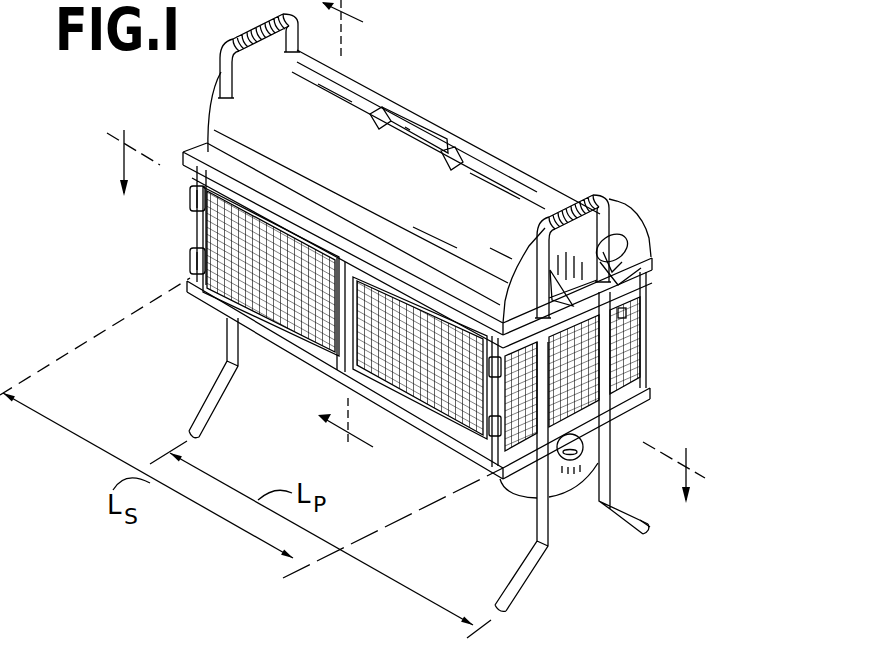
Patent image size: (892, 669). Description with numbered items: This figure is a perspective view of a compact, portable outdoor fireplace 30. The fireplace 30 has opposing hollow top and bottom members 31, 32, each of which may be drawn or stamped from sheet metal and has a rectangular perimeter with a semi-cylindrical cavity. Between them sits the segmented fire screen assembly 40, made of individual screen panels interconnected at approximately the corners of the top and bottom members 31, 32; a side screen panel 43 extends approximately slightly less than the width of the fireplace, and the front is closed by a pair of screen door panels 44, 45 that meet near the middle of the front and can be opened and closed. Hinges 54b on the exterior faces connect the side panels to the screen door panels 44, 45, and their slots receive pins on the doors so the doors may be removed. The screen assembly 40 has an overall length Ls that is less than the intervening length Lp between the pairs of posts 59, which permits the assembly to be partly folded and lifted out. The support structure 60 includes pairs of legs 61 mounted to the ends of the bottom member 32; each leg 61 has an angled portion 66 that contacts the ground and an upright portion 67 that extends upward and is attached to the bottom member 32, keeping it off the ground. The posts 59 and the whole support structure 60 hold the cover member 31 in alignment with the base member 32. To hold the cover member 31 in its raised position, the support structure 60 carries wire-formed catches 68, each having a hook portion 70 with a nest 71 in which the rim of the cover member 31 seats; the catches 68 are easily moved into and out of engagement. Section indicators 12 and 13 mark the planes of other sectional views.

The section line 12- 12 is at (350, 234).
The section line 13- 13 is at (417, 302).
The portable outdoor fireplace 30 is at (98, 258).
The top member 31 is at (520, 182).
The bottom member 32 is at (500, 490).
The fire screen assembly 40 is at (182, 242).
The side screen panel 43 is at (613, 337).
The screen door panel 44 is at (237, 298).
The screen door panel 45 is at (445, 420).
The hinge 54b is at (193, 203).
The post 59 is at (622, 313).
The support structure 60 is at (637, 500).
The leg 61 is at (633, 527).
The angled portion 66 is at (246, 405).
The upright portion 67 is at (607, 437).
The catch 68 is at (627, 243).
The hook portion 70 is at (612, 290).
The nest 71 is at (613, 258).